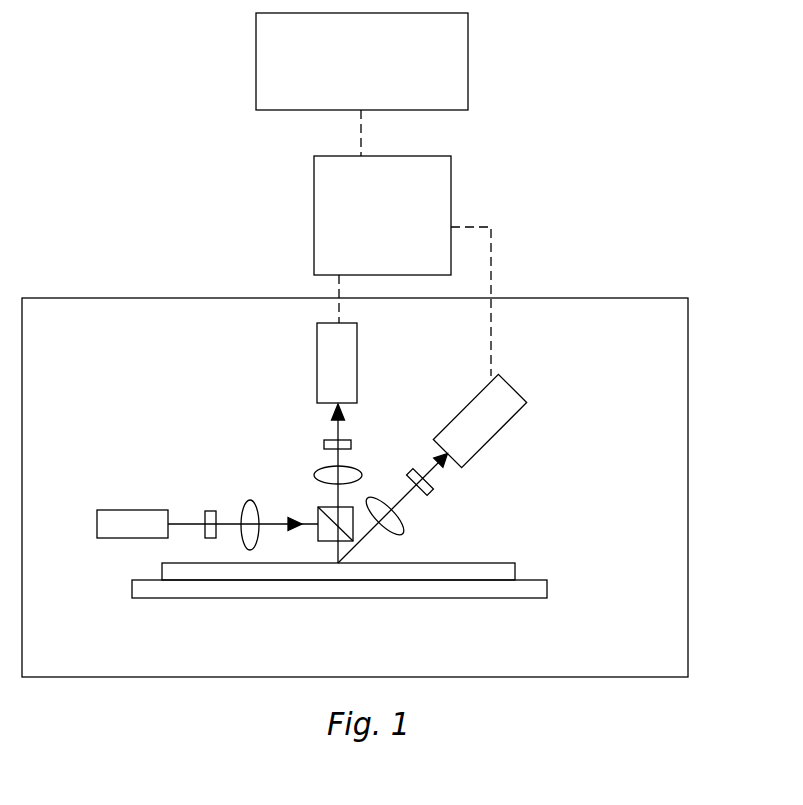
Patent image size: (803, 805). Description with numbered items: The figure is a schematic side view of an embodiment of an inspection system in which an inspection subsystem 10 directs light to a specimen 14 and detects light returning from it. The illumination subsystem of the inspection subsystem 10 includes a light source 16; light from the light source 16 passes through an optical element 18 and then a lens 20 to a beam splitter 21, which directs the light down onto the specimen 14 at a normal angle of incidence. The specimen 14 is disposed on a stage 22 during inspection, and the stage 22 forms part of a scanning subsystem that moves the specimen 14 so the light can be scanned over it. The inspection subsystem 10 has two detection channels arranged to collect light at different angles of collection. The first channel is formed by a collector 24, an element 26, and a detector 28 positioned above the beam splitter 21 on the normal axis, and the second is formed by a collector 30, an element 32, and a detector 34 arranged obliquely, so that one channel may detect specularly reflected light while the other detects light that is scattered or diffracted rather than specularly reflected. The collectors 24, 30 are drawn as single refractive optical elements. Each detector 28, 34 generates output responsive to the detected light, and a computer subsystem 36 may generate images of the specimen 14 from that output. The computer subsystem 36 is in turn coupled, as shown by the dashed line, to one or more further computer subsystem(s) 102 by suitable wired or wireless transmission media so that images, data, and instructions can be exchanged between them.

The inspection subsystem 10 is at (688, 318).
The computer subsystem(s) 102 is at (362, 61).
The computer subsystem 36 is at (382, 215).
The specimen 14 is at (162, 563).
The light source 16 is at (107, 510).
The optical element 18 is at (213, 510).
The lens 20 is at (250, 500).
The beam splitter 21 is at (333, 507).
The stage 22 is at (132, 592).
The collector 24 is at (315, 470).
The element 26 is at (323, 442).
The detector 28 is at (317, 365).
The collector 30 is at (402, 530).
The element 32 is at (427, 493).
The detector 34 is at (512, 420).